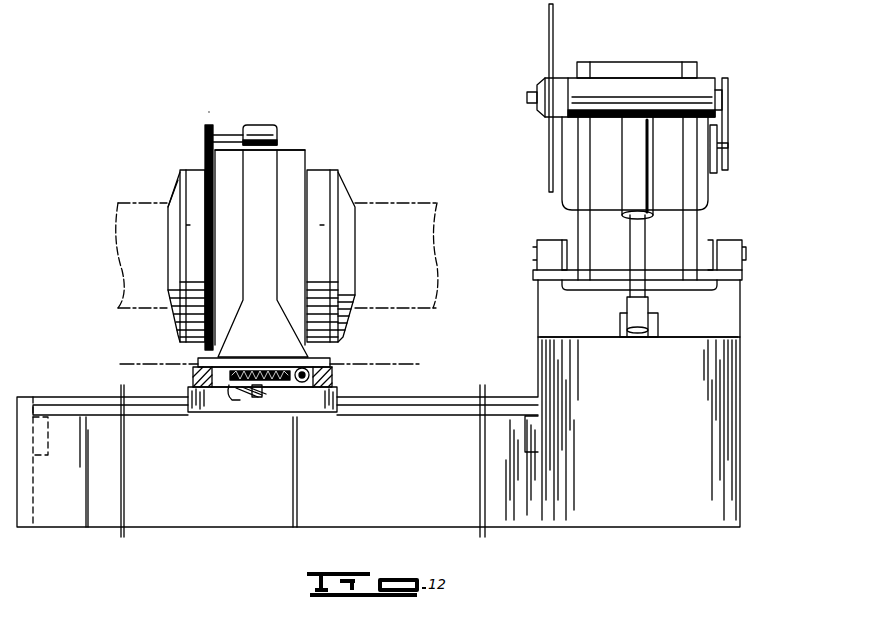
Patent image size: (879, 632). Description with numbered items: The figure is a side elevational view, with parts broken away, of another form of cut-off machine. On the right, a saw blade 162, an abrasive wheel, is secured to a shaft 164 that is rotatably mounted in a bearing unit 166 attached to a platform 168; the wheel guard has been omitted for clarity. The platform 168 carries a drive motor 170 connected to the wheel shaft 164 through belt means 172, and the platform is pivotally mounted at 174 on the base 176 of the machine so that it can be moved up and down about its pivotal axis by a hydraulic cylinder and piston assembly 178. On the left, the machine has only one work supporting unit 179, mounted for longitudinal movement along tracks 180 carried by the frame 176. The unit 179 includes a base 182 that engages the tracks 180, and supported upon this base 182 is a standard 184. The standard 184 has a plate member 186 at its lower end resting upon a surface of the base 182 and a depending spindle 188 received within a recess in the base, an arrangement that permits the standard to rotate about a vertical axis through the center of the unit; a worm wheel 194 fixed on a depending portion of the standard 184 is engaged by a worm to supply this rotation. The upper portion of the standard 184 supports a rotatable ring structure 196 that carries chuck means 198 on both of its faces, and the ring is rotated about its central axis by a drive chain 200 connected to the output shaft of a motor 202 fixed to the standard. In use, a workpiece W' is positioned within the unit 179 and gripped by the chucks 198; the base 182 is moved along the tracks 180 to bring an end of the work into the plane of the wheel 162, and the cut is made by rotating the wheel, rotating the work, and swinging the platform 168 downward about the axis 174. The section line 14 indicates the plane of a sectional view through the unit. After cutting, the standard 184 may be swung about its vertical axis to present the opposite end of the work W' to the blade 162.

The section line 14- 14 is at (135, 348).
The saw blade 162 is at (553, 47).
The shaft 164 is at (728, 96).
The bearing unit 166 is at (700, 90).
The platform 168 is at (632, 62).
The drive motor 170 is at (710, 200).
The belt means 172 is at (727, 128).
The pivot 174 is at (746, 257).
The base 176 is at (742, 410).
The hydraulic cylinder and piston assembly 178 is at (647, 219).
The work supporting unit 179 is at (207, 113).
The tracks 180 is at (78, 397).
The base 182 is at (335, 415).
The standard 184 is at (273, 265).
The plate member 186 is at (323, 360).
The depending spindle 188 is at (258, 392).
The worm wheel 194 is at (232, 395).
The ring structure 196 is at (298, 148).
The chuck means 198 is at (172, 182).
The drive chain 200 is at (205, 148).
The motor 202 is at (260, 124).
The workpiece W is at (434, 256).